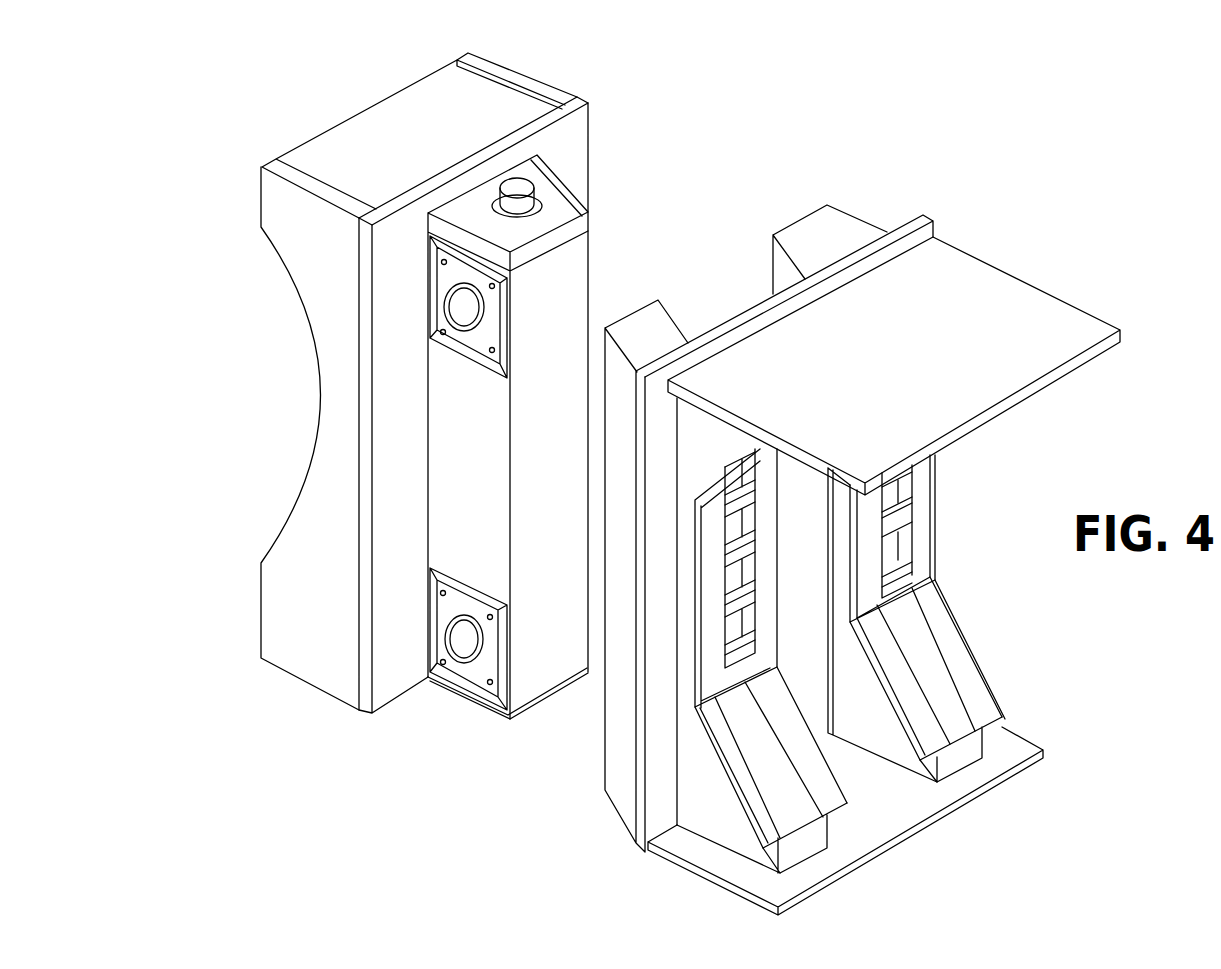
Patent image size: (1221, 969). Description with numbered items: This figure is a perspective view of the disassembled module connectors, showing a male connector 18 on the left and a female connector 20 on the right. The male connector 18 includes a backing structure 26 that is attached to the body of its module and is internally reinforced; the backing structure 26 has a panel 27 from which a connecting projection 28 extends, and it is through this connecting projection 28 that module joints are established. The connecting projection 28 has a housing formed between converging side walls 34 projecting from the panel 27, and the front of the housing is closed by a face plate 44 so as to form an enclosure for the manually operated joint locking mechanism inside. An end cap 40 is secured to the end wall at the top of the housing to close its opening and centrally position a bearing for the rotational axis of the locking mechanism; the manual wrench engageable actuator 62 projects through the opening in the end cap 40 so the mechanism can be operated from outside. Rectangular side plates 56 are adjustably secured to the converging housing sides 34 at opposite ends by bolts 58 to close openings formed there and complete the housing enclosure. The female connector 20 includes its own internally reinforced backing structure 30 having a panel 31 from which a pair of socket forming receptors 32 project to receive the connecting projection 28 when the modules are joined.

The male connector 18 is at (484, 425).
The female connector 20 is at (868, 518).
The backing structure 26 is at (355, 657).
The panel 27 is at (357, 390).
The connecting projection 28 is at (525, 713).
The backing structure 30 is at (938, 214).
The panel 31 is at (763, 305).
The socket forming receptors 32 is at (668, 332).
The converging side walls 34 is at (447, 489).
The end cap 40 is at (603, 413).
The face plate 44 is at (545, 287).
The rectangular side plates 56 is at (482, 343).
The bolts 58 is at (495, 352).
The wrench engageable actuator 62 is at (518, 184).